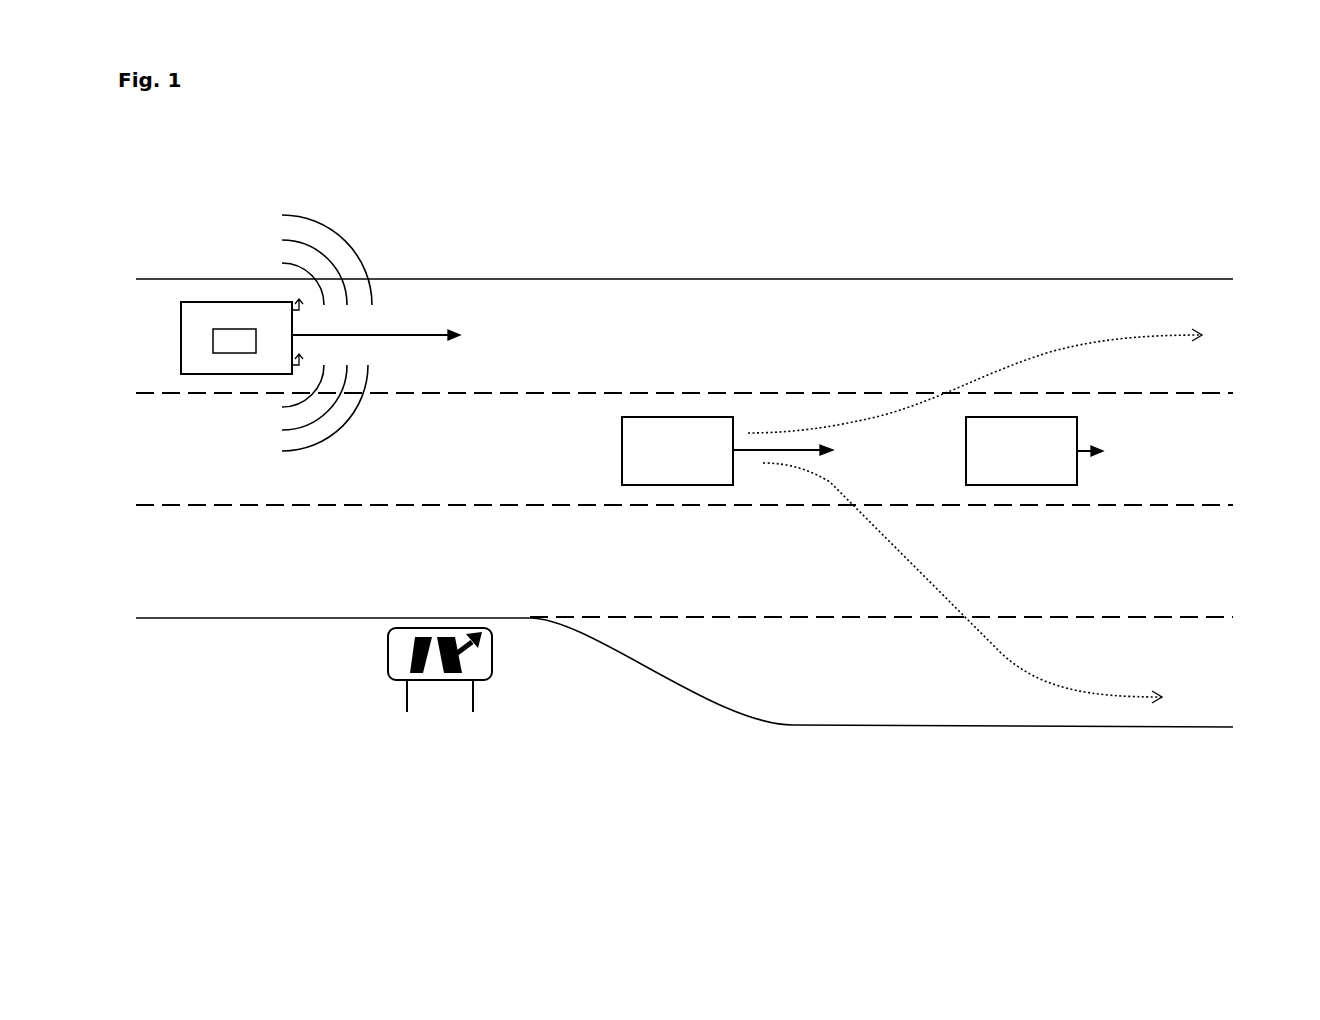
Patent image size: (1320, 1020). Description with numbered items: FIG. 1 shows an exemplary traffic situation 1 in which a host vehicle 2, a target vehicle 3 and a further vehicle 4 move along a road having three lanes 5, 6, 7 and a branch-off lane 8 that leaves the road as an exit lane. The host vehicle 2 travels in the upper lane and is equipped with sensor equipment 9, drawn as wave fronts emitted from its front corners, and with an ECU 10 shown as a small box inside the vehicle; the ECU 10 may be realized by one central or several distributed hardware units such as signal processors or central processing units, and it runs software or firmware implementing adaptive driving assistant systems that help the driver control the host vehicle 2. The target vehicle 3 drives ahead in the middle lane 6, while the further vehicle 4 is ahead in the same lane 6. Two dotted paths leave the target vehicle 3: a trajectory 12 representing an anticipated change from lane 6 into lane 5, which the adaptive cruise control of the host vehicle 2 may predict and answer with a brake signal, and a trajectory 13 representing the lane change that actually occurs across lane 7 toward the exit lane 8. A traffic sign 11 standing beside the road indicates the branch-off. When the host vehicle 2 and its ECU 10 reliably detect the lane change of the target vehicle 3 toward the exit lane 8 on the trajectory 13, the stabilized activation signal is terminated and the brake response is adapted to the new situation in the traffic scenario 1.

The traffic situation 1 is at (285, 750).
The host vehicle 2 is at (208, 378).
The target vehicle 3 is at (645, 417).
The vehicle 4 is at (1070, 486).
The lane 5 is at (1228, 343).
The lane 6 is at (1228, 447).
The lane 7 is at (1222, 558).
The branch-off lane 8 is at (855, 710).
The sensor equipment 9 is at (298, 302).
The ECU 10 is at (219, 329).
The traffic sign 11 is at (492, 665).
The trajectory 12 is at (1020, 357).
The trajectory 13 is at (895, 552).